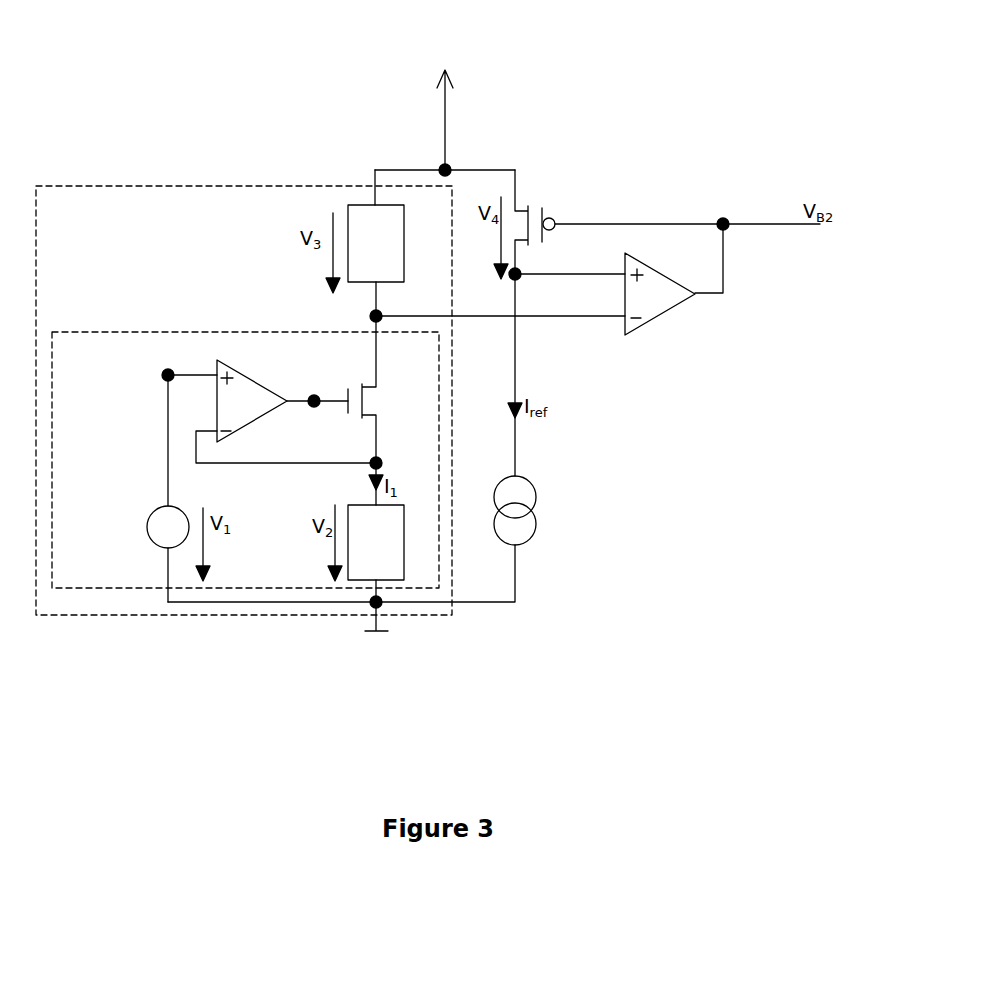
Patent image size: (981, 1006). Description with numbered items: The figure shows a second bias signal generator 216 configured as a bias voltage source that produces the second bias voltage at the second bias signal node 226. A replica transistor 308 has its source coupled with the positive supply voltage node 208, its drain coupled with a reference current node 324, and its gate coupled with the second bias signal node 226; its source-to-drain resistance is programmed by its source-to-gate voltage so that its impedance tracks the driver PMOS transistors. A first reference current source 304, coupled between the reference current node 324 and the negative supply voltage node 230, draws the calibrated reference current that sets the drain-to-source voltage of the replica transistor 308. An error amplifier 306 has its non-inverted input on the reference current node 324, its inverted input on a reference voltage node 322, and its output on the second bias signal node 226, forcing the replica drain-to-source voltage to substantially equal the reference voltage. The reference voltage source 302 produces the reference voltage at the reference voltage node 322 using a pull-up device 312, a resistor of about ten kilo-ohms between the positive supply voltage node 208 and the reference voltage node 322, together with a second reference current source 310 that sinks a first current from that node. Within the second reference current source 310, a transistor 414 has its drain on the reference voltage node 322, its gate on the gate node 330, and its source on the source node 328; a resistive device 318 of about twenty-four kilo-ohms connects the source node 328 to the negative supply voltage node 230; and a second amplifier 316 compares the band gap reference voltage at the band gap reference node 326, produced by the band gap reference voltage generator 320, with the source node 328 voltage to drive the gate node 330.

The second bias signal generator 216 is at (563, 62).
The positive supply voltage node 208 is at (451, 166).
The reference voltage source 302 is at (318, 212).
The pull-up device 312 is at (393, 268).
The replica transistor 308 is at (530, 208).
The reference current node 324 is at (521, 270).
The error amplifier 306 is at (670, 306).
The second bias signal node 226 is at (727, 218).
The reference voltage node 322 is at (369, 314).
The second reference current source 310 is at (430, 354).
The band gap reference node 326 is at (162, 381).
The first reference transistor gate node 330 is at (312, 394).
The second amplifier 316 is at (257, 416).
The transistor 414 is at (364, 416).
The reference transistor source node 328 is at (382, 459).
The band gap reference voltage generator 320 is at (149, 519).
The first reference current source 304 is at (529, 482).
The resistive device 318 is at (393, 567).
The negative supply voltage node 230 is at (383, 633).